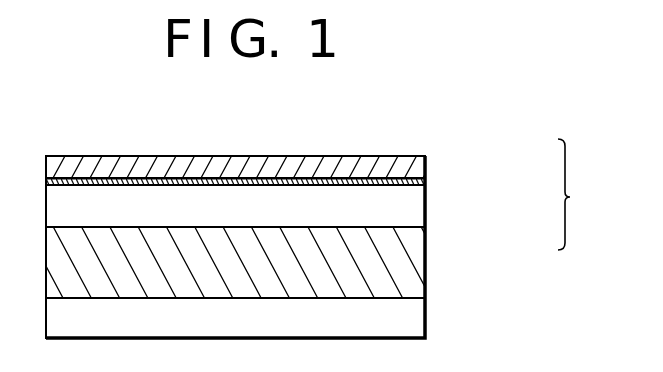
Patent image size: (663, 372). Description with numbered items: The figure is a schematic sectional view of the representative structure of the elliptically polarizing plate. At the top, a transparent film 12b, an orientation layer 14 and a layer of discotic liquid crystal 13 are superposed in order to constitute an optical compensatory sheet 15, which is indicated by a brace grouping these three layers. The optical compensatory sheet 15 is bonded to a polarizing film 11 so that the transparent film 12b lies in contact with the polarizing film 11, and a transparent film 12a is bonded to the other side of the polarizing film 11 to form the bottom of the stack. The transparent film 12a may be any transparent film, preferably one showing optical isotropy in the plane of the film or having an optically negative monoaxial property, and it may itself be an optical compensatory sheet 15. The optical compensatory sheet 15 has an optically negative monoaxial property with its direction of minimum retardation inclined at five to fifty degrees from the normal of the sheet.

The polarizing film 11 is at (410, 268).
The transparent film 12a is at (412, 322).
The transparent film 12b is at (407, 210).
The layer of discotic liquid crystal 13 is at (425, 167).
The orientation layer 14 is at (425, 184).
The optical compensatory sheet 15 is at (584, 194).